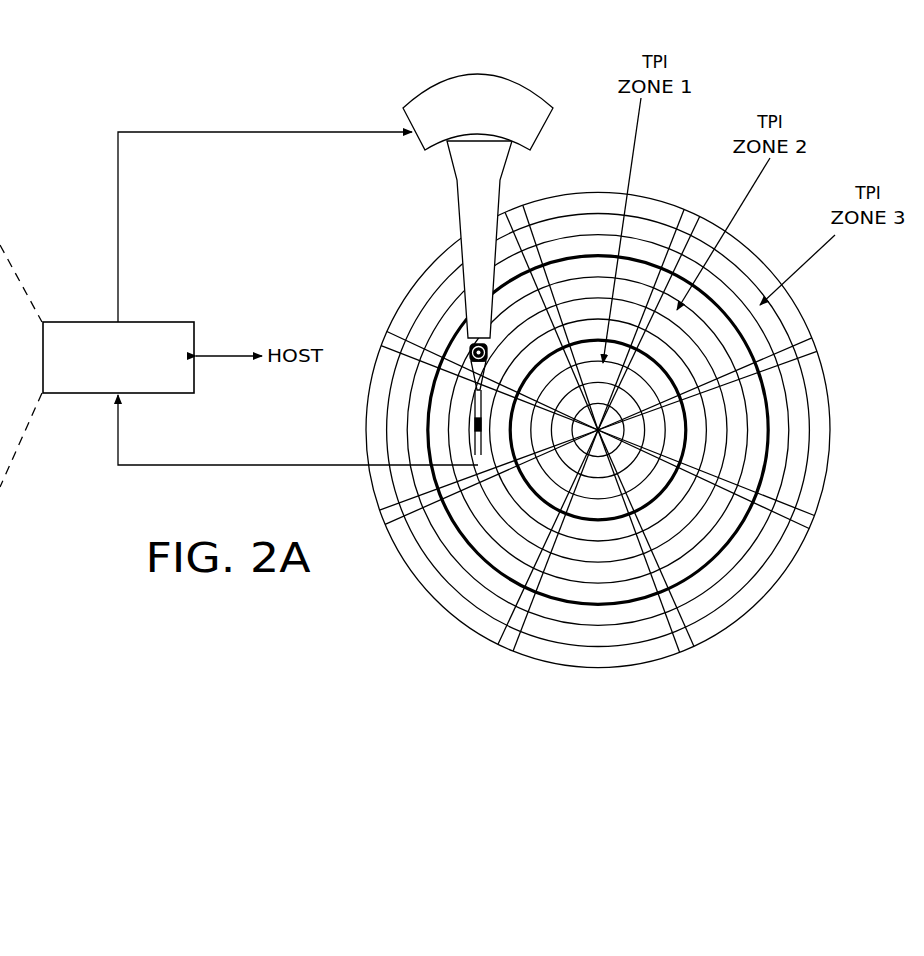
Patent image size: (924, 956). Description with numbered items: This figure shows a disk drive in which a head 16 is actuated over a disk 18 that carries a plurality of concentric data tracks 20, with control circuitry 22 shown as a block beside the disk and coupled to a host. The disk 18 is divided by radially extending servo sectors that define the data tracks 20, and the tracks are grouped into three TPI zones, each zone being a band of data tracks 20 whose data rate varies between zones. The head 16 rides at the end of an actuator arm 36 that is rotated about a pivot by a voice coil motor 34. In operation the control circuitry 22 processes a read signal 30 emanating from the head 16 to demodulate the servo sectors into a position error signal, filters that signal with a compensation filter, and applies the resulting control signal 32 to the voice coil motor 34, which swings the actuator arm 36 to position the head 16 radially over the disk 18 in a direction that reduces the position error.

The head 16 is at (470, 435).
The disk 18 is at (412, 596).
The data tracks 20 is at (600, 225).
The control circuitry 22 is at (159, 322).
The read signal 30 is at (258, 467).
The control signal 32 is at (118, 210).
The voice coil motor 34 is at (418, 138).
The actuator arm 36 is at (459, 222).